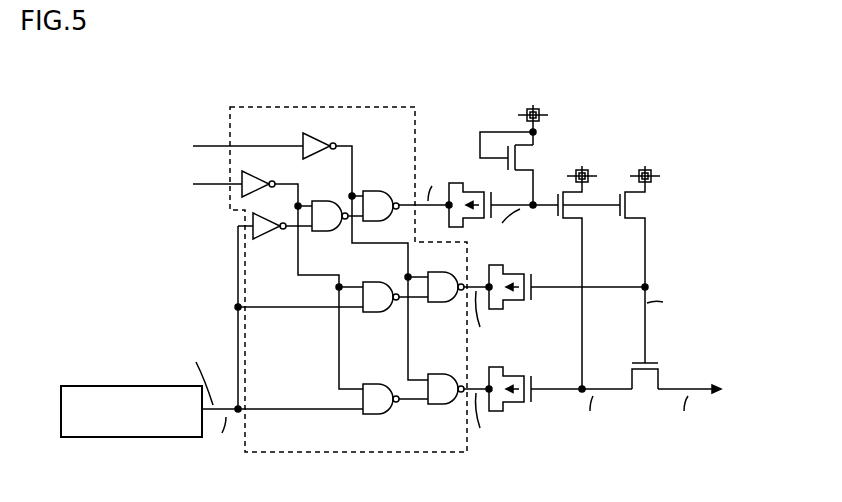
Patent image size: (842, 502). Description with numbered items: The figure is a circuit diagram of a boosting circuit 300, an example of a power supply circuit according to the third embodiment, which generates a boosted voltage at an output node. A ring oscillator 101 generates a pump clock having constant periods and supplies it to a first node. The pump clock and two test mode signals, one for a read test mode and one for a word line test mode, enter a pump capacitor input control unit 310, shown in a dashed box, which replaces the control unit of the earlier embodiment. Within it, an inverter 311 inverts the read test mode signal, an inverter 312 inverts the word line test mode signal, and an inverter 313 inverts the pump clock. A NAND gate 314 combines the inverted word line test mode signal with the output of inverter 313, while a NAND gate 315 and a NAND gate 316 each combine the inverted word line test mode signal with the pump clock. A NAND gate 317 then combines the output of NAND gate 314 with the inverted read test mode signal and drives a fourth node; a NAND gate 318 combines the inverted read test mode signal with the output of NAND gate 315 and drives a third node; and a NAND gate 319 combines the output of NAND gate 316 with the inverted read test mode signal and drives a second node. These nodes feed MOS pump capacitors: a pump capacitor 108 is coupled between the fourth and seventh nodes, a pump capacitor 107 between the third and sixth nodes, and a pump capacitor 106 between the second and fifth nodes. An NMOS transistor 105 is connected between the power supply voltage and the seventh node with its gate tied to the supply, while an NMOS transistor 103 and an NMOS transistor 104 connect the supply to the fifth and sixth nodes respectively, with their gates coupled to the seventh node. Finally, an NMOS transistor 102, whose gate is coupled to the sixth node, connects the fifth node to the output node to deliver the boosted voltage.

The boosting circuit 300 is at (705, 68).
The ring oscillator 101 is at (147, 439).
The NMOS transistor 102 is at (645, 396).
The NMOS transistor 103 is at (580, 211).
The NMOS transistor 104 is at (640, 206).
The NMOS transistor 105 is at (527, 160).
The pump capacitor 106 is at (507, 375).
The pump capacitor 107 is at (507, 272).
The pump capacitor 108 is at (457, 181).
The pump capacitor input control unit 310 is at (387, 105).
The inverter 311 is at (315, 131).
The inverter 312 is at (263, 179).
The inverter 313 is at (265, 240).
The NAND gate 314 is at (319, 232).
The NAND gate 315 is at (374, 313).
The NAND gate 316 is at (374, 415).
The NAND gate 317 is at (379, 190).
The NAND gate 318 is at (437, 302).
The NAND gate 319 is at (437, 405).